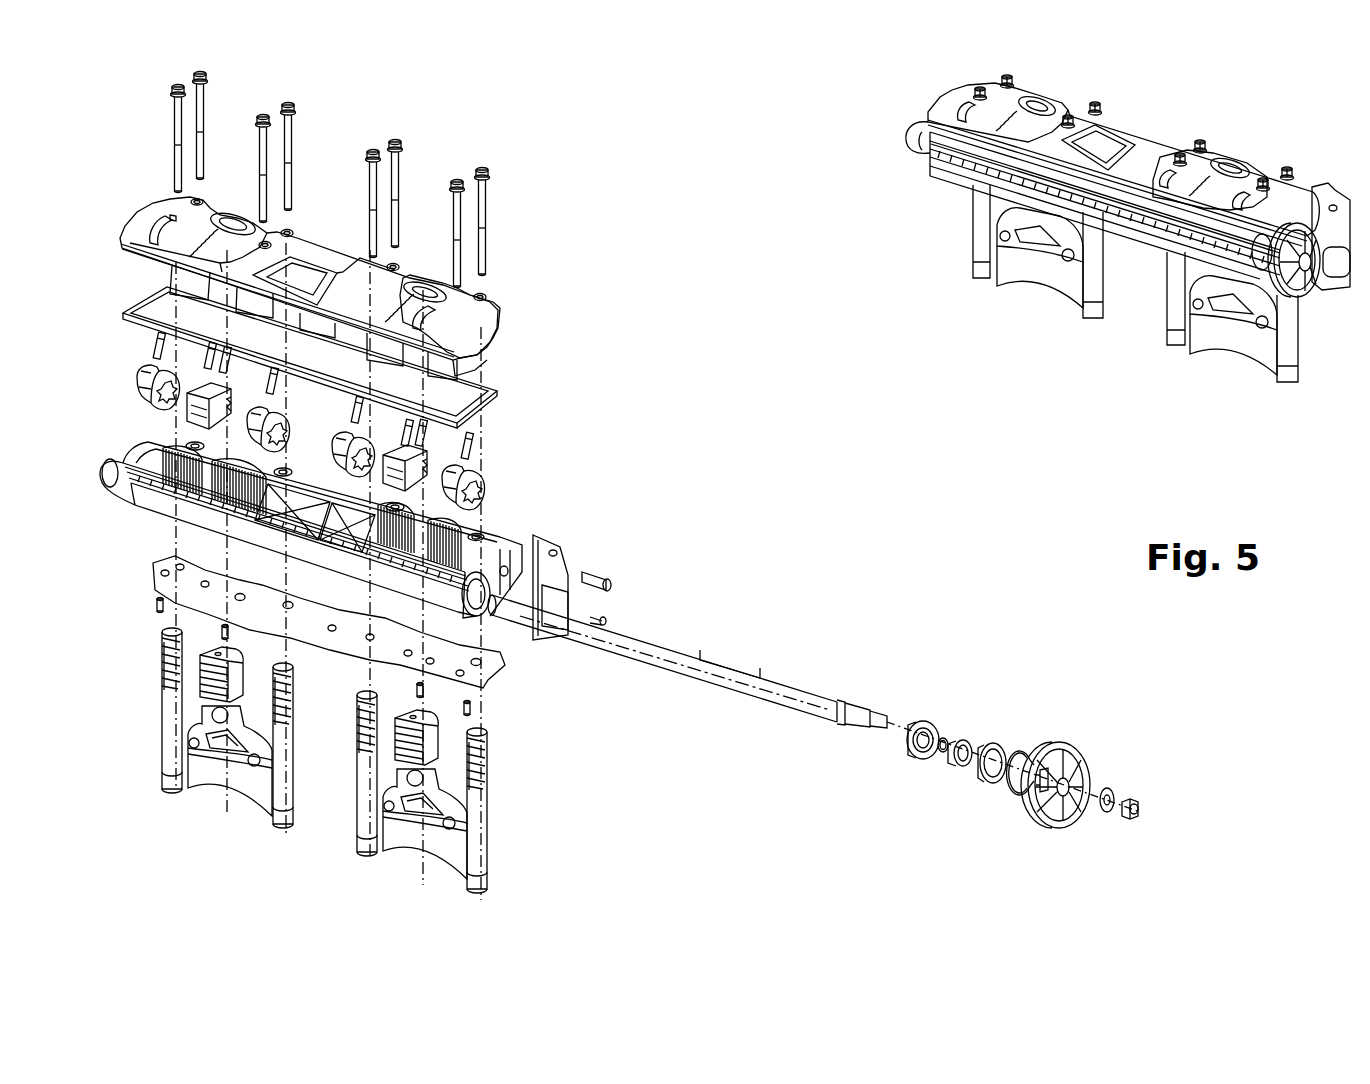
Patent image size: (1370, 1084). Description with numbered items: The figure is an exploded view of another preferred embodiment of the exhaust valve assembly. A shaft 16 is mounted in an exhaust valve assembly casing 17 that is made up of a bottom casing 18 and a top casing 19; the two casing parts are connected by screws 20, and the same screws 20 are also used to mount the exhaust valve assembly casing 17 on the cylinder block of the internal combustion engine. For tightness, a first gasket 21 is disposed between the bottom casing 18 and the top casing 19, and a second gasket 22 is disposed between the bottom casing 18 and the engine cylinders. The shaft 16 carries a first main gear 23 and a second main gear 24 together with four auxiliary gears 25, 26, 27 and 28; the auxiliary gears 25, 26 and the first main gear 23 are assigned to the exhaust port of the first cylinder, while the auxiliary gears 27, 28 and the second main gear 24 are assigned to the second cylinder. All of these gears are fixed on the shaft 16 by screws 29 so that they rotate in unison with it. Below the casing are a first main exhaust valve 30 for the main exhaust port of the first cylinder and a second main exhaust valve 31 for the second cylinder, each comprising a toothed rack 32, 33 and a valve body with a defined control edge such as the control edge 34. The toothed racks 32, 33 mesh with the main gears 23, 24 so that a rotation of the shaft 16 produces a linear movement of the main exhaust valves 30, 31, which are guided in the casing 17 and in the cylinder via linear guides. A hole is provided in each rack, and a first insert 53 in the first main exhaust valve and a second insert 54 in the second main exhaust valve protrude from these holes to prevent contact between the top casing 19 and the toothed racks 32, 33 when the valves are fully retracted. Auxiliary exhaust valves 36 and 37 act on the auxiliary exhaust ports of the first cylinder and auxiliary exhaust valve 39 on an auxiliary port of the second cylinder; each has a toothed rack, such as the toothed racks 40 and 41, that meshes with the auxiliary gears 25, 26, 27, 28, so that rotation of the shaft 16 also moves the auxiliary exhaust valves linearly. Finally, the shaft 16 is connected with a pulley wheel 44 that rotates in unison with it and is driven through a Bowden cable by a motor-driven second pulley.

The shaft 16 is at (677, 658).
The exhaust valve assembly casing 17 is at (569, 287).
The bottom casing 18 is at (493, 538).
The top casing 19 is at (491, 300).
The screws 20 is at (488, 205).
The first gasket 21 is at (470, 412).
The second gasket 22 is at (440, 630).
The first main gear 23 is at (200, 413).
The second main gear 24 is at (423, 467).
The auxiliary gear 25 is at (140, 375).
The auxiliary gear 26 is at (287, 427).
The auxiliary gear 27 is at (342, 453).
The auxiliary gear 28 is at (488, 485).
The screws 29 is at (475, 452).
The first main exhaust valve 30 is at (255, 783).
The second main exhaust valve 31 is at (443, 852).
The toothed rack 32 is at (232, 675).
The toothed rack 33 is at (405, 720).
The control edge 34 is at (200, 785).
The auxiliary exhaust valve 36 is at (172, 783).
The auxiliary exhaust valve 37 is at (280, 810).
The auxiliary exhaust valve 39 is at (487, 877).
The toothed rack 40 is at (165, 665).
The toothed rack 41 is at (290, 690).
The pulley wheel 44 is at (1062, 742).
The first insert 53 is at (220, 631).
The second insert 54 is at (428, 690).